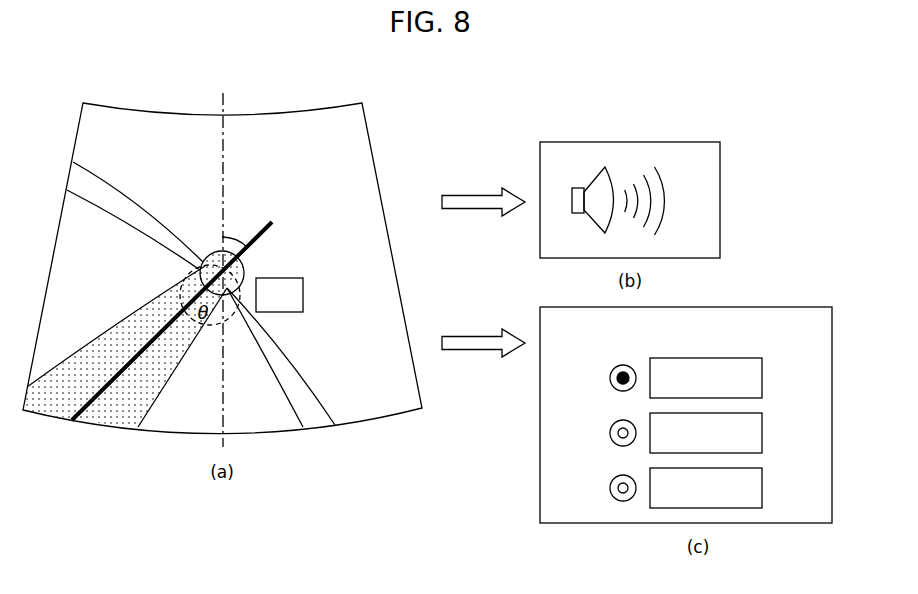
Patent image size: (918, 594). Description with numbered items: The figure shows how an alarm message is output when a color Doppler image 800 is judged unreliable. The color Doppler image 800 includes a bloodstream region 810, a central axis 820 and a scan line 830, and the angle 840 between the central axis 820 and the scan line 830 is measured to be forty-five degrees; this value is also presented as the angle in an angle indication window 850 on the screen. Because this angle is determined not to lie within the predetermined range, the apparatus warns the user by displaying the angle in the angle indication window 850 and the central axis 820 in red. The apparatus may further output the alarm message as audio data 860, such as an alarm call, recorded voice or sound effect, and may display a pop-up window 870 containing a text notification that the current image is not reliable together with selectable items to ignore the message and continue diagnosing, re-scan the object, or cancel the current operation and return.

In FIG. 8A, the color Doppler image 800 is at (133, 152).
In FIG. 8A, the bloodstream region 810 is at (167, 392).
In FIG. 8A, the central axis 820 is at (142, 348).
In FIG. 8A, the scan line 830 is at (223, 176).
In FIG. 8A, the angle 840 is at (177, 283).
In FIG. 8A, the angle indication window 850 is at (303, 295).
In FIG. 8B, the audio data output 860 is at (632, 141).
In FIG. 8C, the pop-up window 870 is at (743, 305).